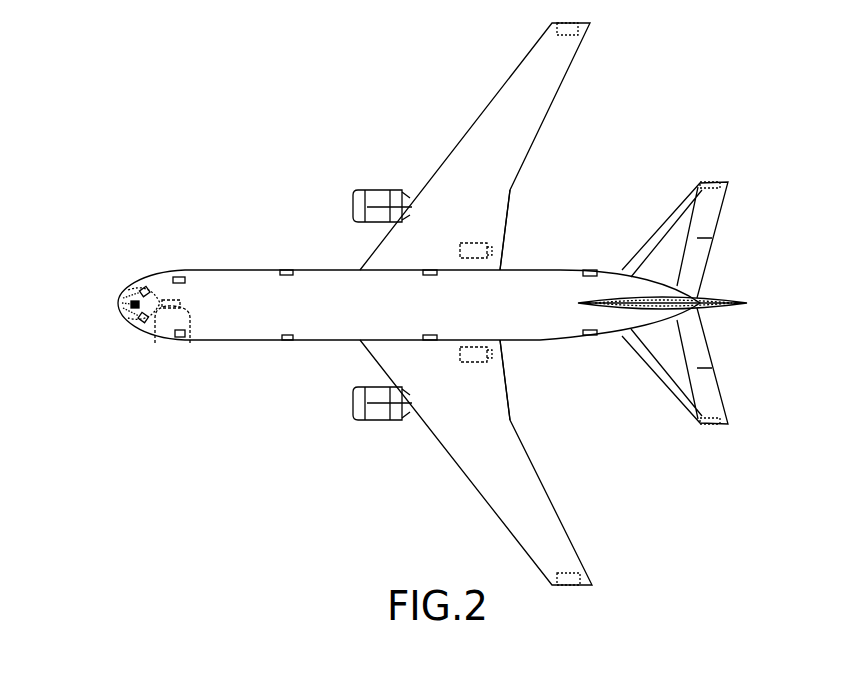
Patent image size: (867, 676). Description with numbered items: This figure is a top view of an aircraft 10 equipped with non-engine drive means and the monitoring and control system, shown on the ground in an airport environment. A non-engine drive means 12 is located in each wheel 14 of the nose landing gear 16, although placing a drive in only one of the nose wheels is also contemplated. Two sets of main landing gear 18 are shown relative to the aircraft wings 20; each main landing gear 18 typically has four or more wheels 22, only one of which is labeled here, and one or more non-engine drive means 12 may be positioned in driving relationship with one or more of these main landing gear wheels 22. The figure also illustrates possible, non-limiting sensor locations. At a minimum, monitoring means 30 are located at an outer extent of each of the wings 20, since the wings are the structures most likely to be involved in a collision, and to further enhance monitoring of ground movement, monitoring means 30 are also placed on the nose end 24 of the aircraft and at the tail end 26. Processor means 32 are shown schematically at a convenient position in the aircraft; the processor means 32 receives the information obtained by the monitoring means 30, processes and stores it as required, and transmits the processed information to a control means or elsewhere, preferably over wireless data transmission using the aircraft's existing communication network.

The aircraft 10 is at (162, 170).
The non-engine drive means 12 is at (187, 321).
The wheel 14 is at (157, 314).
The nose landing gear 16 is at (183, 292).
The main landing gear 18 is at (504, 249).
The aircraft wings 20 is at (523, 127).
The main landing gear wheels 22 is at (470, 243).
The nose end 24 is at (117, 311).
The tail end 26 is at (717, 288).
The monitoring means 30 is at (122, 301).
The processor means 32 is at (287, 341).